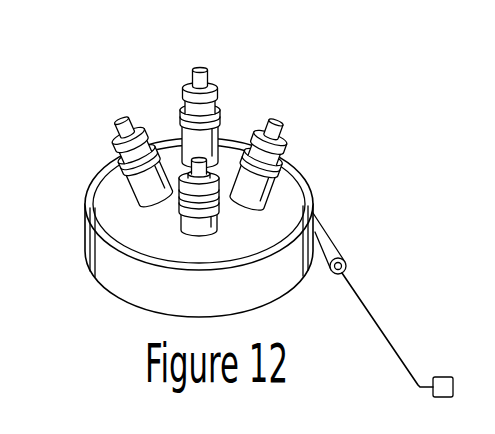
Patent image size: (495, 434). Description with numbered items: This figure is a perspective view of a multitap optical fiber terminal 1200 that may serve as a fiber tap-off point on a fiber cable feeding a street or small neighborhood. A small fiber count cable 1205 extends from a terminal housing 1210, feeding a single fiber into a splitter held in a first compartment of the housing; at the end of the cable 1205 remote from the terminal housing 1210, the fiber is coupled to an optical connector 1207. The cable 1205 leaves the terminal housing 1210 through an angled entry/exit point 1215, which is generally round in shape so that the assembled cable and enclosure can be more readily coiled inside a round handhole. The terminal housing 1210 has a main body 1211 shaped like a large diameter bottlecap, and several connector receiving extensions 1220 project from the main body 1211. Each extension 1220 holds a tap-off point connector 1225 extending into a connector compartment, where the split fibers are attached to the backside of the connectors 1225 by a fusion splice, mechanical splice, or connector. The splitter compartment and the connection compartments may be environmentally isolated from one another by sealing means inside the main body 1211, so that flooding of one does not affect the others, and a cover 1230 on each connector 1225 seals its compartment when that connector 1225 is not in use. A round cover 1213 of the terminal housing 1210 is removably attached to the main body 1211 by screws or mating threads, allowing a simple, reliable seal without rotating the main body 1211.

The multitap optical fiber terminal 1200 is at (252, 209).
The small fiber count cable 1205 is at (377, 323).
The optical connector 1207 is at (442, 377).
The terminal housing 1210 is at (187, 236).
The main body 1211 is at (93, 232).
The cover 1213 is at (105, 275).
The angled entry/exit point 1215 is at (327, 233).
The connector receiving extension 1220 is at (219, 131).
The tap-off point connector 1225 is at (217, 92).
The cover 1230 is at (202, 70).